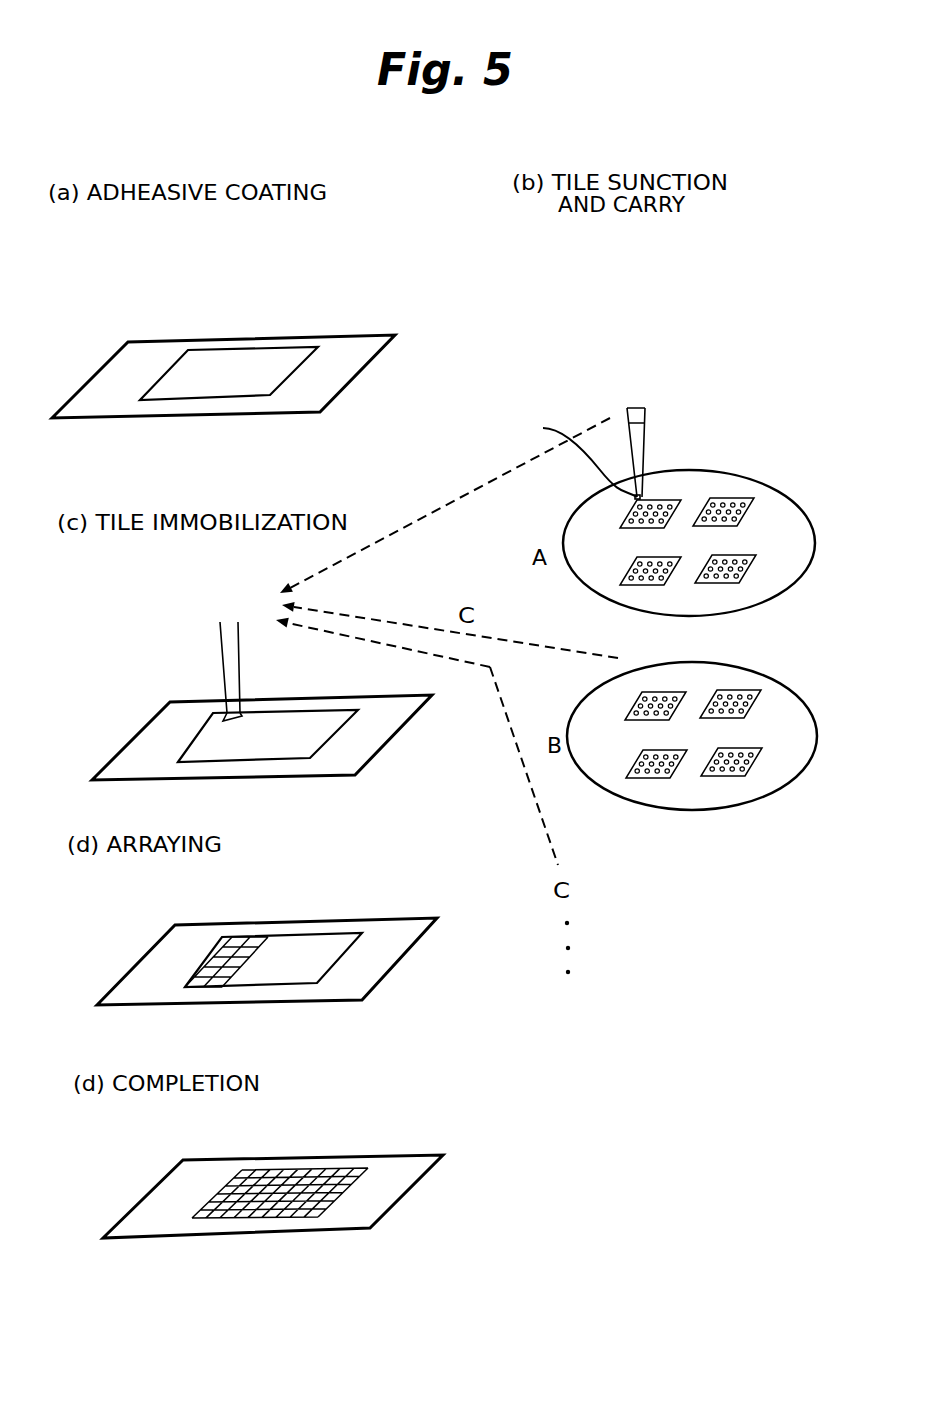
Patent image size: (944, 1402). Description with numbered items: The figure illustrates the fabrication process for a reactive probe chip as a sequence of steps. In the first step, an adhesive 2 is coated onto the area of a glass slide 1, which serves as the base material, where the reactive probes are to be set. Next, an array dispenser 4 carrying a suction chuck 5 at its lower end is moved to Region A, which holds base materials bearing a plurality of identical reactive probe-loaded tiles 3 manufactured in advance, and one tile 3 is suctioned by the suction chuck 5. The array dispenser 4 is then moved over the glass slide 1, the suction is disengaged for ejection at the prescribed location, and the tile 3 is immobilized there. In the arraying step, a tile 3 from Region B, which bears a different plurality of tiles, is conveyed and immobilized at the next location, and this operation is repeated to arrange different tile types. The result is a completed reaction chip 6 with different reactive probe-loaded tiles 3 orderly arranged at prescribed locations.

The glass slide 1 is at (420, 977).
The adhesive 2 is at (172, 388).
The reactive probe-loaded tile 3 is at (492, 659).
The array dispenser 4 is at (438, 496).
The suction chuck 5 is at (553, 426).
The reaction chip 6 is at (407, 1158).